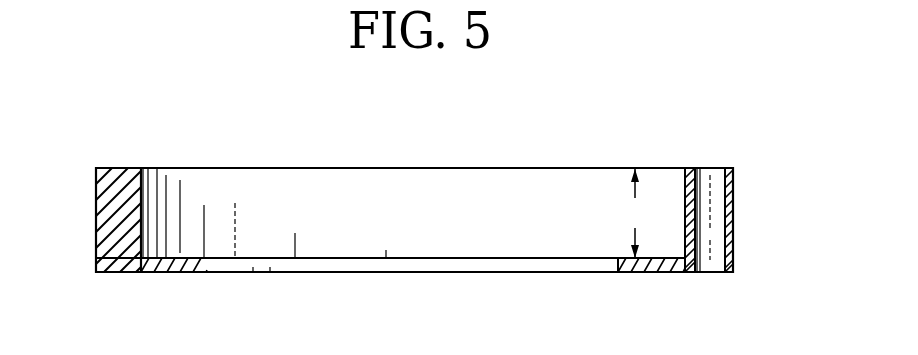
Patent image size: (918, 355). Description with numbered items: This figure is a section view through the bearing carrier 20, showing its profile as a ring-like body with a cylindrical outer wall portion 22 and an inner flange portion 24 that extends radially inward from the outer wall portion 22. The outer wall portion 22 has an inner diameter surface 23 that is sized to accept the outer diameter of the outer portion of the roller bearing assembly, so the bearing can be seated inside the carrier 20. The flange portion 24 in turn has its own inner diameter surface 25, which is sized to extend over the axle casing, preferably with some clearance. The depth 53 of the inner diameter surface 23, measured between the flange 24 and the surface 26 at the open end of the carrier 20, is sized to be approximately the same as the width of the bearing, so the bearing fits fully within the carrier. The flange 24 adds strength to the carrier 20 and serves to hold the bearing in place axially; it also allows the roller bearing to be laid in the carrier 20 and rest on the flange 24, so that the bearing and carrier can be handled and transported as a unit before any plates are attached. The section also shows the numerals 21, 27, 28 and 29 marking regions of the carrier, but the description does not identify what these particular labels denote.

The bearing carrier 20 is at (383, 168).
The end wall 21 is at (95, 218).
The cylindrical outer wall portion 22 is at (117, 170).
The inner diameter surface 23 is at (142, 204).
The inner flange portion 24 is at (187, 260).
The inner diameter surface 25 is at (204, 263).
The surface 26 is at (133, 167).
The bottom surface 27 is at (128, 273).
The bottom wall portion 28 is at (623, 258).
The opposite end wall 29 is at (722, 187).
The depth 53 is at (634, 213).